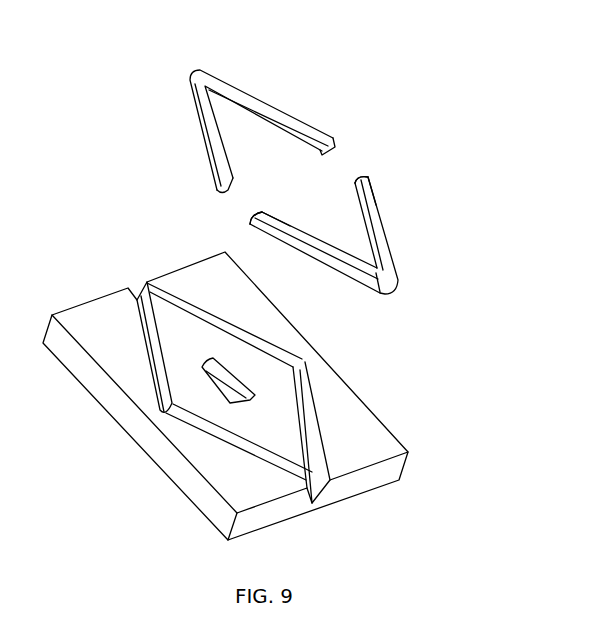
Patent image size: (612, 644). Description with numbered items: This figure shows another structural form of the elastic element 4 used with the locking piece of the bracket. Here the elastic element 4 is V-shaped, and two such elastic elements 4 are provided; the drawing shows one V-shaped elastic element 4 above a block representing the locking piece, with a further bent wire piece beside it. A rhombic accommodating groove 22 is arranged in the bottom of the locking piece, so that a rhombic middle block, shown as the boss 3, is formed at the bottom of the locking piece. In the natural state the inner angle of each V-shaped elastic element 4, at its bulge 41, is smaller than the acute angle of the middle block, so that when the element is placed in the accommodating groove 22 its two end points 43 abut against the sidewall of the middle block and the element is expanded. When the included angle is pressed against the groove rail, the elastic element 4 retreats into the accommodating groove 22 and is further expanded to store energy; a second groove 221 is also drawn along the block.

The elastic element 4 is at (324, 153).
The bulge 41 is at (398, 284).
The end point 43 is at (262, 214).
The boss 3 is at (263, 375).
The accommodating groove 22 is at (157, 403).
The second groove 221 is at (293, 437).